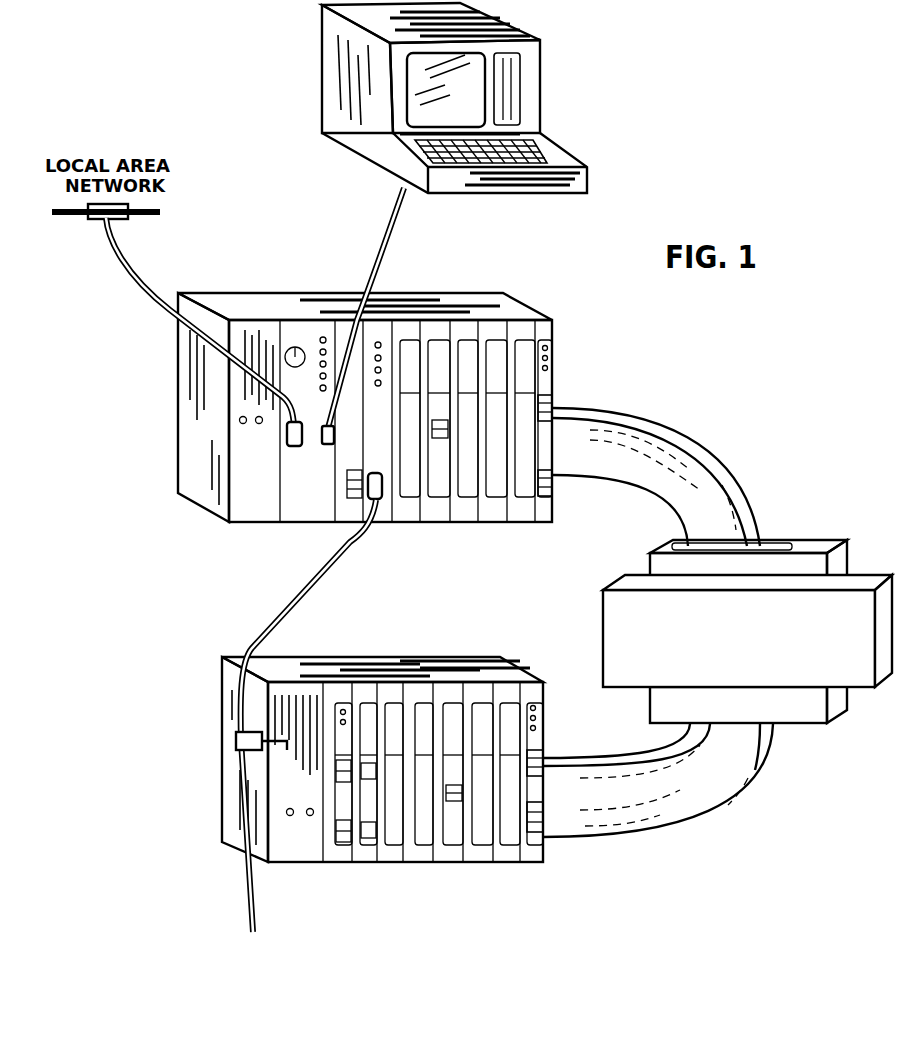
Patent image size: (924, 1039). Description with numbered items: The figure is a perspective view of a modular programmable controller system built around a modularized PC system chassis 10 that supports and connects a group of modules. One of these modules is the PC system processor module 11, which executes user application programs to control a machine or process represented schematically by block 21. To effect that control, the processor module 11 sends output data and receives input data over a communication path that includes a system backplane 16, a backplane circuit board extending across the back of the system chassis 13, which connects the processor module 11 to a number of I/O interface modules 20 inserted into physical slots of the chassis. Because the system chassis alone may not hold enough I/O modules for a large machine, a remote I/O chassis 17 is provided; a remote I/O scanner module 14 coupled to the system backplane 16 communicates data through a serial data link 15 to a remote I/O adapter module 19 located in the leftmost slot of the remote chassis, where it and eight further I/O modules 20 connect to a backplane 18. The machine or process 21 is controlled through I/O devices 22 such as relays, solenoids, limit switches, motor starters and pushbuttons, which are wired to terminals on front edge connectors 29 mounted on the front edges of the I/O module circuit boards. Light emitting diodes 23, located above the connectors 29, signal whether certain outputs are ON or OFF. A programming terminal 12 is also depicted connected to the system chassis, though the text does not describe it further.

The modularized PC system chassis 10 is at (150, 478).
The PC system processor module 11 is at (315, 512).
The programming terminal 12 is at (325, 103).
The system chassis 13 is at (335, 286).
The remote I/O scanner module 14 is at (378, 518).
The serial data link 15 is at (282, 600).
The system backplane 16 is at (266, 290).
The remote I/O chassis 17 is at (380, 650).
The backplane 18 is at (437, 655).
The remote I/O adapter module 19 is at (298, 862).
The I/O interface modules 20 is at (517, 520).
The machine or process 21 is at (720, 677).
The I/O devices 22 is at (650, 565).
The light emitting diodes 23 is at (553, 366).
The front edge connectors 29 is at (556, 492).